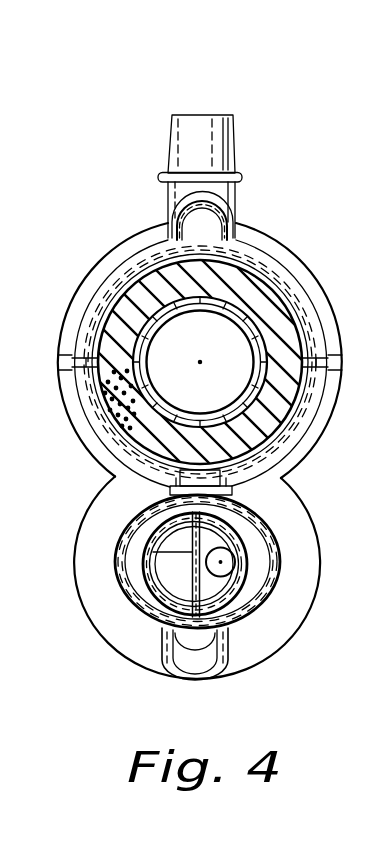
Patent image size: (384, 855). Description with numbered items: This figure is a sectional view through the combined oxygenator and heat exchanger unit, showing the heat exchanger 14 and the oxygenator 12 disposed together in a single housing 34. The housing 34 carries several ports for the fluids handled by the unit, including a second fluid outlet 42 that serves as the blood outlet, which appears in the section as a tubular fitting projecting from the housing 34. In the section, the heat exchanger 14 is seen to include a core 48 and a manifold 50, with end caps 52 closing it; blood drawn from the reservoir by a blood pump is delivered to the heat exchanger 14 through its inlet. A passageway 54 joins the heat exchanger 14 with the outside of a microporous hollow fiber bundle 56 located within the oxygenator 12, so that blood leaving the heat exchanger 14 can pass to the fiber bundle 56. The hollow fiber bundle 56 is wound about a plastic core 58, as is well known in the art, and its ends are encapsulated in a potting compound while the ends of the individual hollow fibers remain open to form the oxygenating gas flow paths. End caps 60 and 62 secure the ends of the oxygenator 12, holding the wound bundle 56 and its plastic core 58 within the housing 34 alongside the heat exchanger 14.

The oxygenator 12 is at (310, 256).
The heat exchanger 14 is at (277, 655).
The housing 34 is at (292, 486).
The second fluid outlet 42 is at (215, 113).
The core 48 is at (260, 557).
The manifold 50 is at (141, 562).
The end caps 52 is at (163, 603).
The passageway 54 is at (172, 476).
The hollow fiber bundle 56 is at (112, 400).
The plastic core 58 is at (136, 338).
The end cap 60 is at (192, 358).
The end cap 62 is at (233, 355).